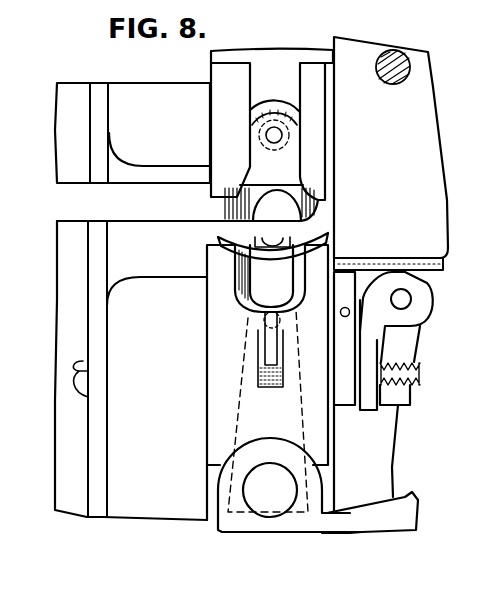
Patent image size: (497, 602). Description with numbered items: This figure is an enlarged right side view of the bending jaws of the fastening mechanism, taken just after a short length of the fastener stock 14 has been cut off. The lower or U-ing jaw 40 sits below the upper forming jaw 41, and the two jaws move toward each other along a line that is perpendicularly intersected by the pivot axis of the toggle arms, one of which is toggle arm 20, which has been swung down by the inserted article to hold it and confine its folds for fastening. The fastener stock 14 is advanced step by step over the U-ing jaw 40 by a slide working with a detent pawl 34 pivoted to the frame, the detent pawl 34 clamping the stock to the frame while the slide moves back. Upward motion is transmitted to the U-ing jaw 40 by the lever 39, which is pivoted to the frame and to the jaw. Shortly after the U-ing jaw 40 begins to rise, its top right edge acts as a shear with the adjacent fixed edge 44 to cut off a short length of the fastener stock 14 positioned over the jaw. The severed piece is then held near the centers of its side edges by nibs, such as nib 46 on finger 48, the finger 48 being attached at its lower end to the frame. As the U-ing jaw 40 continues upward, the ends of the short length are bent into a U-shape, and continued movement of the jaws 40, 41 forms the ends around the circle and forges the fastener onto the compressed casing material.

The fastener stock 14 is at (413, 265).
The toggle arm 20 is at (213, 209).
The detent pawl 34 is at (428, 312).
The lever 39 is at (406, 496).
The U-ing jaw 40 is at (207, 365).
The forming jaw 41 is at (280, 54).
The fixed edge 44 is at (338, 256).
The nib 46 is at (268, 241).
The finger 48 is at (265, 295).